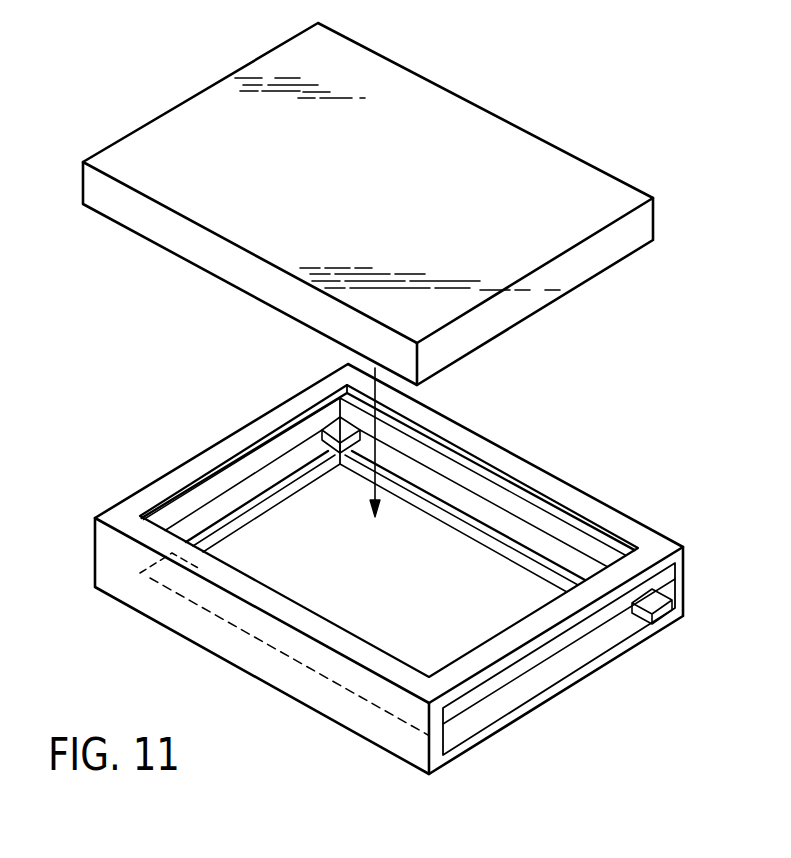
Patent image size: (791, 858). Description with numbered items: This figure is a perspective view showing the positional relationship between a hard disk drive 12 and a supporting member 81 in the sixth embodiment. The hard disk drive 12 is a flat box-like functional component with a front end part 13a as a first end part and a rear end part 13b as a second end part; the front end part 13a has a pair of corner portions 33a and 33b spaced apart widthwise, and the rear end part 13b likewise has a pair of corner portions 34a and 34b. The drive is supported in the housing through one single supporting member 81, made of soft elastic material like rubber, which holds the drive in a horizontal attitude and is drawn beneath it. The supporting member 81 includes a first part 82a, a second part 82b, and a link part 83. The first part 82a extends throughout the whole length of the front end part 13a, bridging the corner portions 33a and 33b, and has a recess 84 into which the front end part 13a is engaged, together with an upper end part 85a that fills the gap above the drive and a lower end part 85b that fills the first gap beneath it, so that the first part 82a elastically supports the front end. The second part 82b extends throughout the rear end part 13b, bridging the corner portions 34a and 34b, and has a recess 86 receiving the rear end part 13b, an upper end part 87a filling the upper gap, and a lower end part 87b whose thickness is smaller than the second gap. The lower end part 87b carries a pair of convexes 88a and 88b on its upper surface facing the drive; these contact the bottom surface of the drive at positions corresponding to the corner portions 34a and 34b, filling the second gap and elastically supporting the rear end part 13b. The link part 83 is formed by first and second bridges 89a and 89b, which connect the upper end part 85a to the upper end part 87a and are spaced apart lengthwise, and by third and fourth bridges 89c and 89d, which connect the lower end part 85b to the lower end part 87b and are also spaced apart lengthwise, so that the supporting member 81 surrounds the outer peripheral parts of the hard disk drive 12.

The hard disk drive 12 is at (540, 262).
The front end part 13a is at (258, 258).
The rear end part 13b is at (510, 128).
The corner portion 33a is at (113, 158).
The corner portion 33b is at (428, 332).
The corner portion 34a is at (322, 33).
The corner portion 34b is at (630, 196).
The supporting member 81 is at (578, 480).
The first part 82a is at (233, 644).
The second part 82b is at (515, 452).
The link part 83 is at (548, 697).
The recess 84 is at (445, 741).
The upper end part 85a is at (307, 620).
The lower end part 85b is at (310, 692).
The recess 86 is at (534, 515).
The upper end part 87a is at (468, 440).
The lower end part 87b is at (468, 514).
The convex 88a is at (658, 604).
The convex 88b is at (338, 432).
The first bridge 89a is at (508, 645).
The second bridge 89b is at (244, 432).
The third bridge 89c is at (214, 518).
The fourth bridge 89d is at (598, 648).